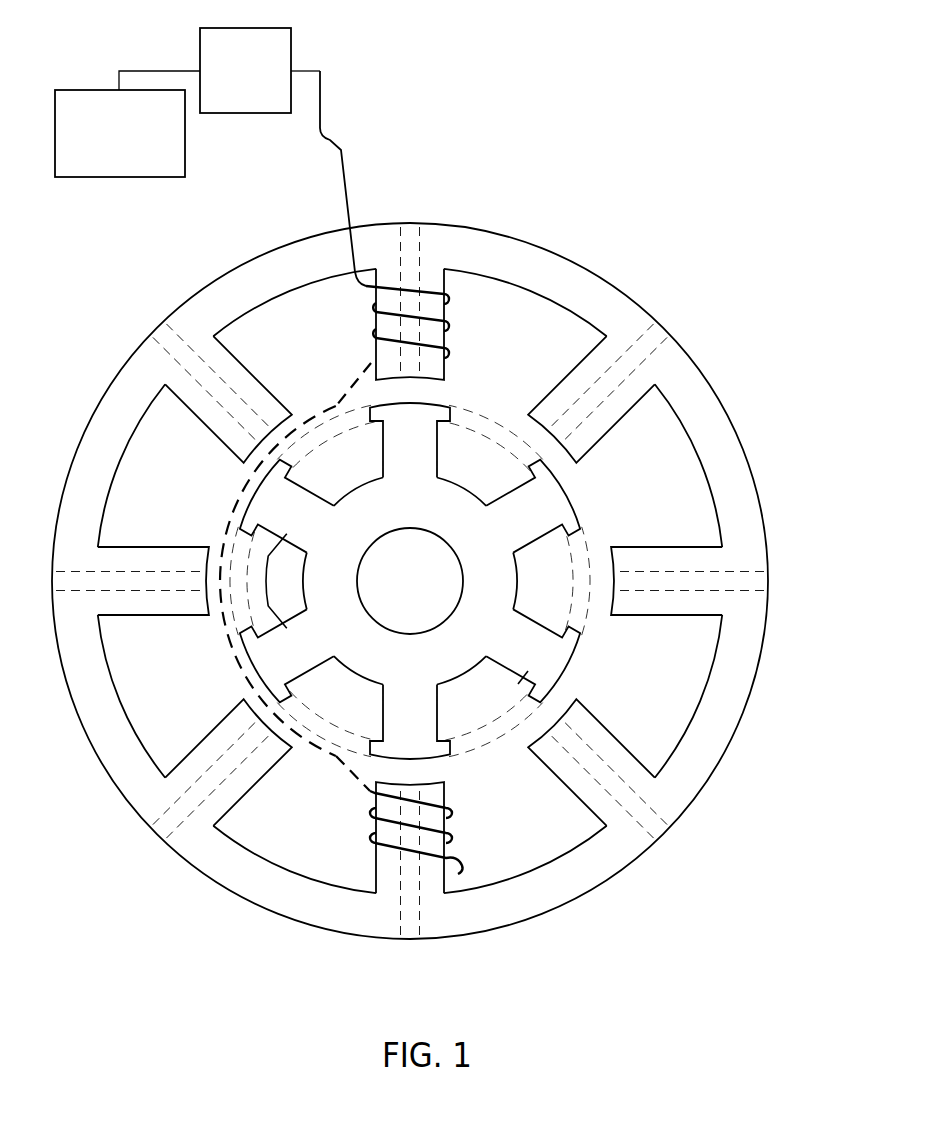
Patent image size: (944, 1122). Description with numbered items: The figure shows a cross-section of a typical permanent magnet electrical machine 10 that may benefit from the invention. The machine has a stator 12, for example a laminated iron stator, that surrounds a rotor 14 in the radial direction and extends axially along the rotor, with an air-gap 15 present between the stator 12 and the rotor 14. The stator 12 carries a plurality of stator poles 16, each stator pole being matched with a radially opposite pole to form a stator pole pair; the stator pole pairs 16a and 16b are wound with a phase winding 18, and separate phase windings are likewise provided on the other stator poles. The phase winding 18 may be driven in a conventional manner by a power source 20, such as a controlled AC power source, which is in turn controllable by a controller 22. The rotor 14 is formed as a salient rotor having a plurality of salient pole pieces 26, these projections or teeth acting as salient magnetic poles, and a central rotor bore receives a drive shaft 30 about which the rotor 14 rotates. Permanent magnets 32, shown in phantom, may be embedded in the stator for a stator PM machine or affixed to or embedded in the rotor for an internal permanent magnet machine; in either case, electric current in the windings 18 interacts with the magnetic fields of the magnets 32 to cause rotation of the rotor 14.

The PM electrical machine 10 is at (567, 229).
The stator 12 is at (692, 372).
The rotor 14 is at (467, 396).
The air-gap 15 is at (563, 471).
The stator poles 16 is at (157, 553).
The stator pole pair 16a is at (454, 312).
The stator pole pair 16b is at (455, 814).
The phase winding 18 is at (368, 291).
The power source 20 is at (247, 27).
The controller 22 is at (88, 178).
The salient pole pieces 26 is at (521, 680).
The drive shaft 30 is at (423, 595).
The permanent magnets 32 is at (680, 577).